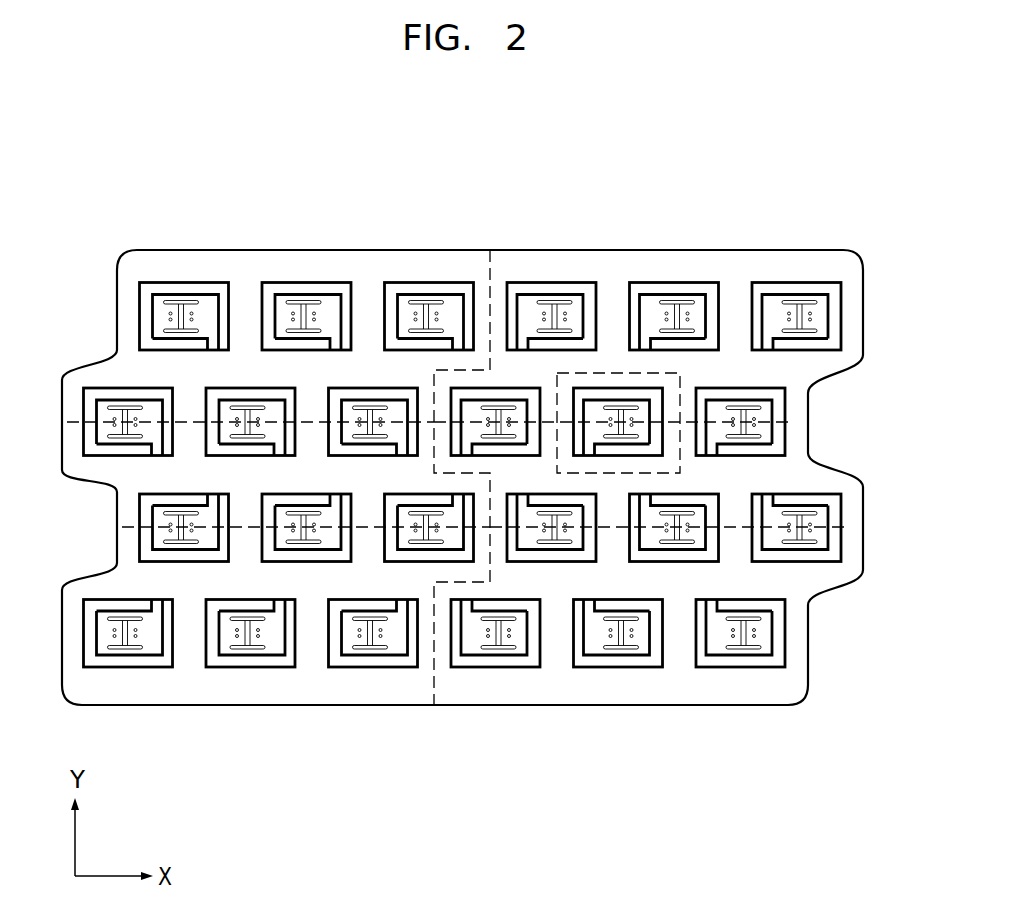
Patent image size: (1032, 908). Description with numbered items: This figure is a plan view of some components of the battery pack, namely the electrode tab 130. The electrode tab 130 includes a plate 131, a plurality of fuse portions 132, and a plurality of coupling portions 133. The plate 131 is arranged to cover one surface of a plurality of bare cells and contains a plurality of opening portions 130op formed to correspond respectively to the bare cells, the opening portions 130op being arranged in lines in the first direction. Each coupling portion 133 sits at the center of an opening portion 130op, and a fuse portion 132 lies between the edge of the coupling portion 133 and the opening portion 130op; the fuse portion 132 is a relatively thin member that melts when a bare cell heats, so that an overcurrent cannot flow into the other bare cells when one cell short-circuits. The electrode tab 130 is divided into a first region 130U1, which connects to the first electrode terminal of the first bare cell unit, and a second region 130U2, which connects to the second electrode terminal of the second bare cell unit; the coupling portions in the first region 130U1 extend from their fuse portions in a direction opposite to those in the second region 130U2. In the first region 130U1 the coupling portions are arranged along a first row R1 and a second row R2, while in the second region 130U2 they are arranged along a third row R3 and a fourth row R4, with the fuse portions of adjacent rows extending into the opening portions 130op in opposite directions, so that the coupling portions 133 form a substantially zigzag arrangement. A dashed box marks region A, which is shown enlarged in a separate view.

The electrode tab 130 is at (836, 195).
The first region 130U1 is at (279, 465).
The second region 130U2 is at (646, 421).
The region A is at (603, 370).
The first row R1 is at (80, 422).
The second row R2 is at (138, 527).
The third row R3 is at (792, 422).
The fourth row R4 is at (847, 528).
The opening portion 130op is at (250, 660).
The plate 131 is at (560, 685).
The fuse portion 132 is at (402, 607).
The coupling portion 133 is at (370, 637).